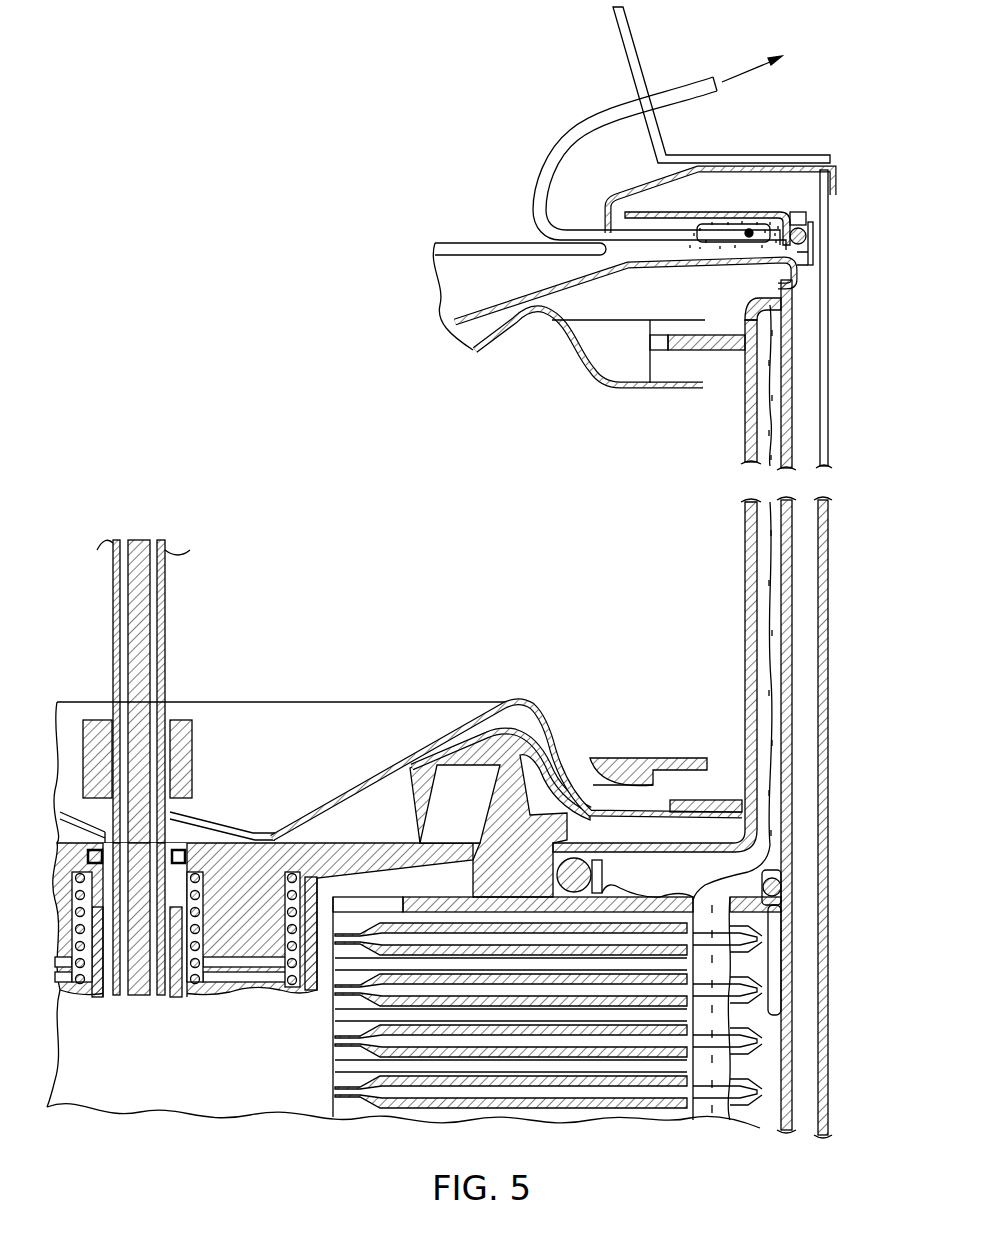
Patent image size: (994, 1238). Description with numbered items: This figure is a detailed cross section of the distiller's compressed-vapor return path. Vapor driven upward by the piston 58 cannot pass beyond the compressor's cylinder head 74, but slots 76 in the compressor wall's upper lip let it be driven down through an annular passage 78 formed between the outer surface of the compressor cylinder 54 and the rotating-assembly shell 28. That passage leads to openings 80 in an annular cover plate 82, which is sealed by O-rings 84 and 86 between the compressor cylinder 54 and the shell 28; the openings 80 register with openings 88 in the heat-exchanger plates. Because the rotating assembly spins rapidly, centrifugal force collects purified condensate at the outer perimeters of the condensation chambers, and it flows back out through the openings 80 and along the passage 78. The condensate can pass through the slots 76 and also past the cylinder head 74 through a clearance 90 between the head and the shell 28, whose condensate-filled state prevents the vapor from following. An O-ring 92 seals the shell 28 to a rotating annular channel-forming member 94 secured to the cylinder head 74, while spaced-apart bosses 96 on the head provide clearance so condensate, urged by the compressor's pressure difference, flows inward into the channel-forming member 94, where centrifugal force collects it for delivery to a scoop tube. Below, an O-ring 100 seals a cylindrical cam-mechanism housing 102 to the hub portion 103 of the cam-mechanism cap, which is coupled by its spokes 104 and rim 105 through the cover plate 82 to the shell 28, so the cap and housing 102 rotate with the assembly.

The rotating-assembly shell 28 is at (795, 418).
The compressor cylinder 54 is at (745, 420).
The piston 58 is at (530, 702).
The cylinder head 74 is at (565, 282).
The slots 76 is at (768, 302).
The annular passage 78 is at (768, 558).
The openings 80 is at (703, 893).
The annular cover plate 82 is at (657, 897).
The O-ring 84 is at (783, 895).
The O-ring 86 is at (580, 877).
The openings in heat-exchanger plates 88 is at (712, 1023).
The clearance 90 is at (813, 252).
The O-ring 92 is at (806, 238).
The channel-forming member 94 is at (707, 213).
The bosses 96 is at (548, 222).
The O-ring 100 is at (340, 880).
The cam-mechanism housing 102 is at (307, 990).
The hub portion 103 is at (273, 834).
The spokes 104 is at (440, 808).
The rim 105 is at (537, 742).